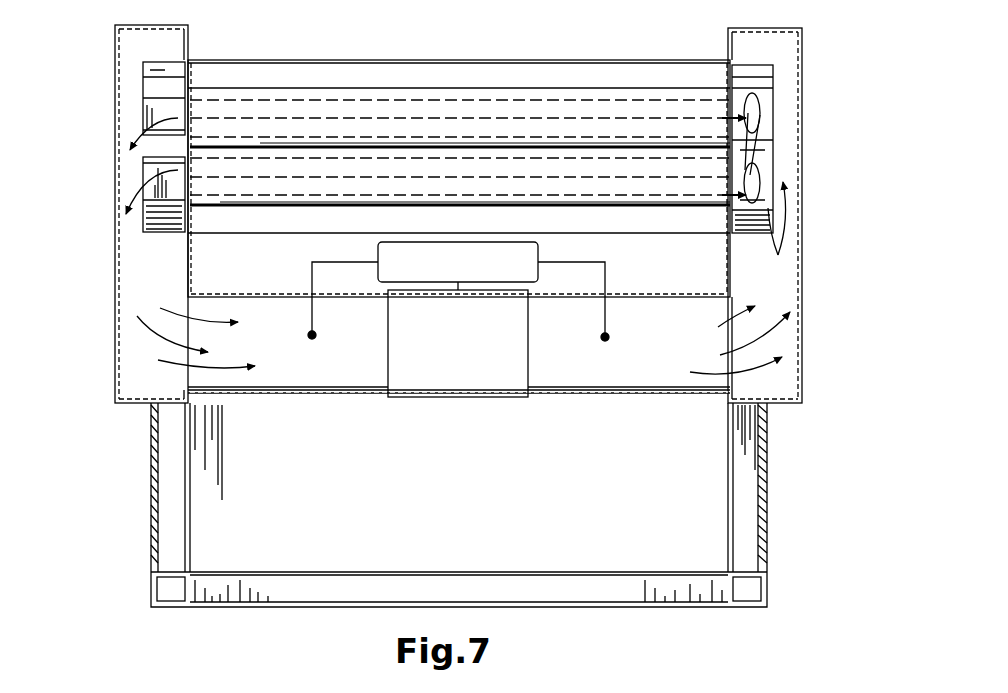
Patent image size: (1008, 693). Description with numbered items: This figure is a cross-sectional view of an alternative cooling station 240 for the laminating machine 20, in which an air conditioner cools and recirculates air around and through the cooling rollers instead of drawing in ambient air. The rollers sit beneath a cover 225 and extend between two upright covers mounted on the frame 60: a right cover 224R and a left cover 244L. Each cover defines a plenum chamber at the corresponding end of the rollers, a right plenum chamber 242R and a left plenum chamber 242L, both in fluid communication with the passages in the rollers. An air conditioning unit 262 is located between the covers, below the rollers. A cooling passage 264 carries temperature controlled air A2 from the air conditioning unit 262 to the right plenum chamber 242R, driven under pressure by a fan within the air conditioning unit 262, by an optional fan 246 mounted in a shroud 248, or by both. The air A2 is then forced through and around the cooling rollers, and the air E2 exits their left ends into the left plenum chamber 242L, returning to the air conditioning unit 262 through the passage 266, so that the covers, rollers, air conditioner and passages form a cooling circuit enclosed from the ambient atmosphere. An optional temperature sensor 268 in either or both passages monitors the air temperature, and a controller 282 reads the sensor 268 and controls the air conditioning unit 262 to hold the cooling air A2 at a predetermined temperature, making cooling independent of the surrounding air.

The laminating machine 20 is at (553, 63).
The frame 60 is at (762, 508).
The cover 225 is at (420, 63).
The cooling station 240 is at (255, 86).
The left cover 244L is at (115, 42).
The right cover 224R is at (800, 83).
The left plenum chamber 242L is at (120, 288).
The right plenum chamber 242R is at (800, 283).
The fan 246 is at (760, 106).
The shroud 248 is at (745, 70).
The air conditioning unit 262 is at (405, 398).
The cooling passage 264 is at (580, 393).
The passage 266 is at (290, 386).
The temperature sensor 268 is at (318, 332).
The controller 282 is at (545, 243).
The exhausted air E2 is at (125, 122).
The temperature controlled air A2 is at (705, 388).